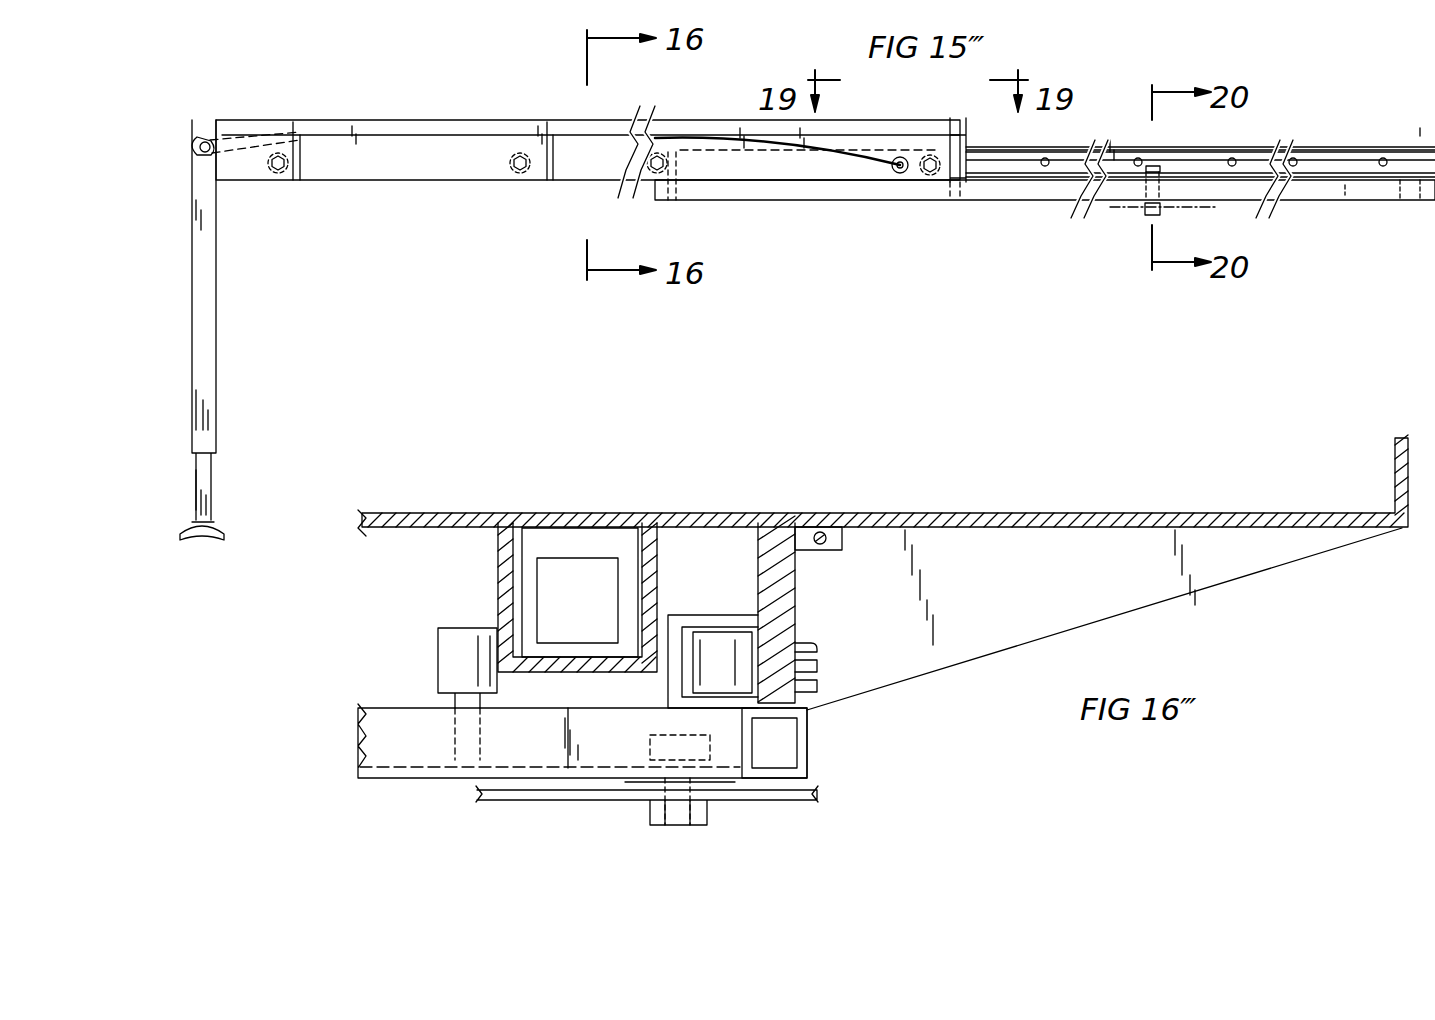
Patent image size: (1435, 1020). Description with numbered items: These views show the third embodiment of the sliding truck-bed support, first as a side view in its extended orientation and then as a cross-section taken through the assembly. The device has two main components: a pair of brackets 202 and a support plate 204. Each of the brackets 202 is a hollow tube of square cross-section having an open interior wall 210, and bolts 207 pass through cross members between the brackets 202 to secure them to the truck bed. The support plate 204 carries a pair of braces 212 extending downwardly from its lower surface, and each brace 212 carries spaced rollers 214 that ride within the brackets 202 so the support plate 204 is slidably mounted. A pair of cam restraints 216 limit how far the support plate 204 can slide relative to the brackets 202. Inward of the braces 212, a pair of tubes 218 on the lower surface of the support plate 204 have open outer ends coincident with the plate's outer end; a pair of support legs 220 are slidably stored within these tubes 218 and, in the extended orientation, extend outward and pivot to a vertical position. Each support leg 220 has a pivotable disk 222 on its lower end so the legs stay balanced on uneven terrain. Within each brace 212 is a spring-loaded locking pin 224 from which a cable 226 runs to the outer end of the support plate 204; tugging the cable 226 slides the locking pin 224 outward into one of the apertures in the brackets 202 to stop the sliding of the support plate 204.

In FIG. 15, the brackets 202 is at (1347, 148).
In FIG. 15, the support plate 204 is at (426, 118).
In FIG. 16, the support plate 204 is at (1021, 515).
In FIG. 15, the bolts 207 is at (1128, 212).
In FIG. 16, the open interior wall 210 is at (758, 615).
In FIG. 16, the braces 212 is at (793, 592).
In FIG. 16, the rollers 214 is at (733, 678).
In FIG. 16, the cam restraints 216 is at (450, 652).
In FIG. 16, the tubes 218 is at (502, 578).
In FIG. 15, the support legs 220 is at (220, 330).
In FIG. 16, the support legs 220 is at (582, 547).
In FIG. 15, the pivotable disk 222 is at (228, 568).
In FIG. 15, the locking pin 224 is at (906, 176).
In FIG. 15, the cable 226 is at (877, 160).